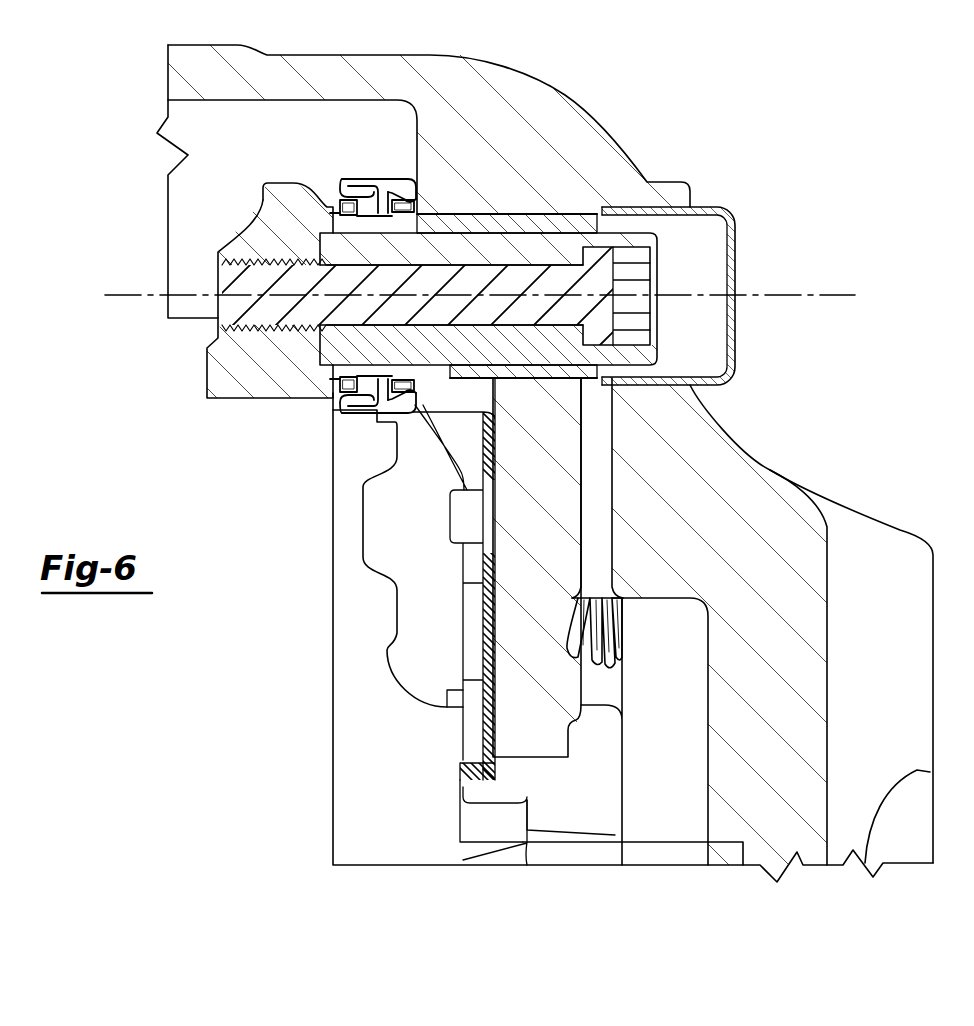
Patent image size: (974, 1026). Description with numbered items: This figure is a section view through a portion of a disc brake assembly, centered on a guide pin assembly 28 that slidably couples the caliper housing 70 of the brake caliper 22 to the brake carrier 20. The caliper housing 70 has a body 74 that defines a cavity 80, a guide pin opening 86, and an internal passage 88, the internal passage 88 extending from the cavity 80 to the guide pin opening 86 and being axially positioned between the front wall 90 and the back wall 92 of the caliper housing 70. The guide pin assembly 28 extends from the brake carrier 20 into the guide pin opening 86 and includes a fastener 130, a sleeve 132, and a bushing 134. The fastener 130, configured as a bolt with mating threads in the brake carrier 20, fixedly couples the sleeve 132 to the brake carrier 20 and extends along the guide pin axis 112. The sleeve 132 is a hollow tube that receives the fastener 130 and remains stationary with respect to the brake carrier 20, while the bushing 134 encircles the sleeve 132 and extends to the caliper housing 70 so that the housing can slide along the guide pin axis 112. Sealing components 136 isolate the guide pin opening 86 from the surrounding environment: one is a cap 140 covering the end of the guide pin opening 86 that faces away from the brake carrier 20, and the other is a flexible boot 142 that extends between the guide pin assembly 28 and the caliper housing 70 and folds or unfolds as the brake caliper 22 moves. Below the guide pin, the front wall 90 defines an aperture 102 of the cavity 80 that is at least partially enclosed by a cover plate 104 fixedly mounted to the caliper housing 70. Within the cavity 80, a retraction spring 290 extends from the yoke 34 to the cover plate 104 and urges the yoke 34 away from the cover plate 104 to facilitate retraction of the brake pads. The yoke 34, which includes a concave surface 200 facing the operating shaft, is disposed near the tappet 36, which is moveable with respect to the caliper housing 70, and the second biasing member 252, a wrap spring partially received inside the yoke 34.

The brake carrier 20 is at (247, 398).
The brake caliper 22 is at (563, 88).
The guide pin assembly 28 is at (556, 196).
The yoke 34 is at (708, 693).
The tappet 36 is at (333, 775).
The caliper housing 70 is at (475, 164).
The body 74 is at (800, 493).
The cavity 80 is at (616, 696).
The guide pin opening 86 is at (392, 373).
The internal passage 88 is at (597, 426).
The front wall 90 is at (538, 696).
The back wall 92 is at (773, 810).
The aperture 102 is at (538, 781).
The cover plate 104 is at (477, 626).
The guide pin axis 112 is at (768, 295).
The fastener 130 is at (432, 308).
The sleeve 132 is at (330, 358).
The bushing 134 is at (472, 213).
The sealing component 136 is at (601, 234).
The cap 140 is at (735, 238).
The flexible boot 142 is at (368, 187).
The concave surface 200 is at (667, 813).
The second biasing member 252 is at (580, 810).
The retraction spring 290 is at (617, 623).